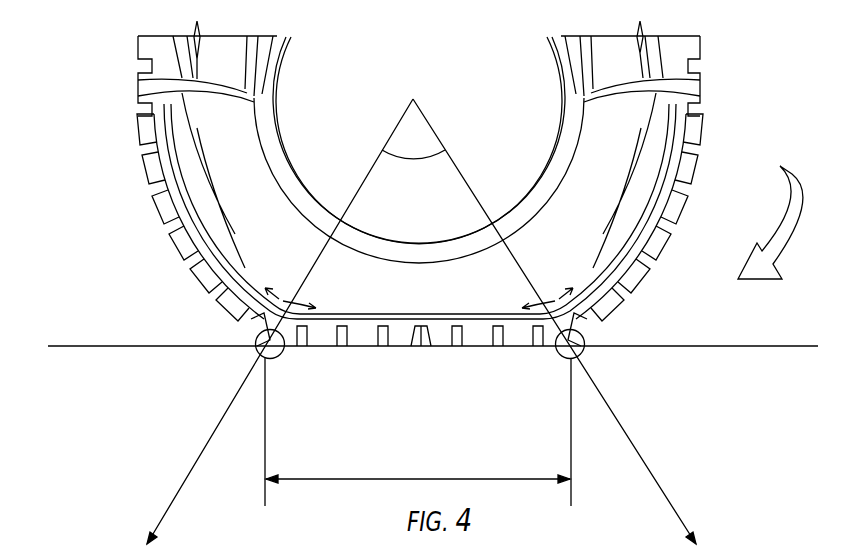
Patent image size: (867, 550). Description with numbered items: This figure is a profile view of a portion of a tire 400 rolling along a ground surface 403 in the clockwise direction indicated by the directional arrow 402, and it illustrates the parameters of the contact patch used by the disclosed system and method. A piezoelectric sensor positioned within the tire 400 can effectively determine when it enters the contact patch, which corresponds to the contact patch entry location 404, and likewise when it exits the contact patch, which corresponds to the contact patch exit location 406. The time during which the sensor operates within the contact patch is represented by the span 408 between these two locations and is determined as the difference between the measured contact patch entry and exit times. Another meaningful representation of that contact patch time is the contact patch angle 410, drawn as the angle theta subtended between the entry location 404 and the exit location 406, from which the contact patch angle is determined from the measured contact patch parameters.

The tire 400 is at (704, 123).
The directional arrow 402 is at (795, 172).
The ground surface 403 is at (775, 343).
The contact patch entry location 404 is at (588, 337).
The contact patch exit location 406 is at (252, 337).
The span 408 is at (432, 478).
The contact patch angle 410 is at (401, 116).